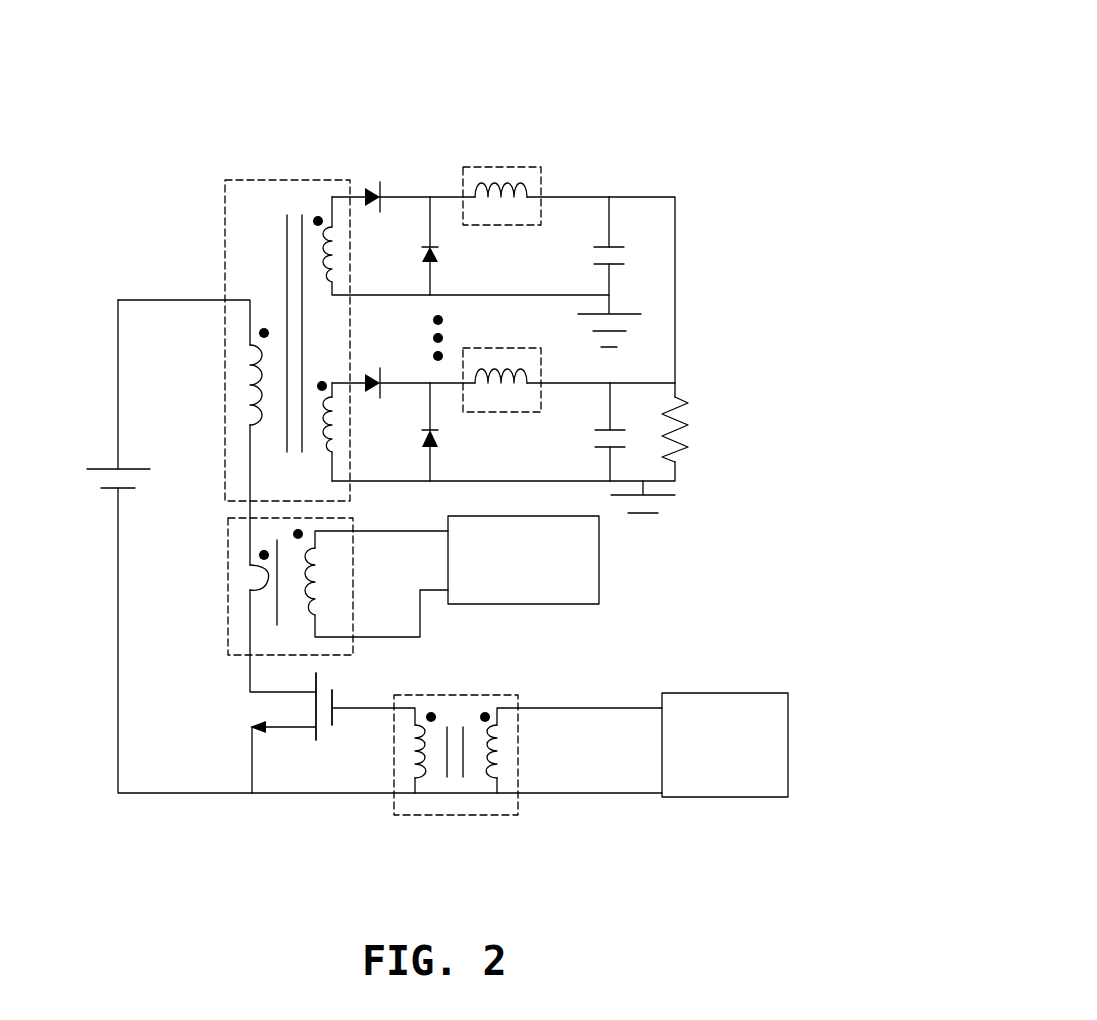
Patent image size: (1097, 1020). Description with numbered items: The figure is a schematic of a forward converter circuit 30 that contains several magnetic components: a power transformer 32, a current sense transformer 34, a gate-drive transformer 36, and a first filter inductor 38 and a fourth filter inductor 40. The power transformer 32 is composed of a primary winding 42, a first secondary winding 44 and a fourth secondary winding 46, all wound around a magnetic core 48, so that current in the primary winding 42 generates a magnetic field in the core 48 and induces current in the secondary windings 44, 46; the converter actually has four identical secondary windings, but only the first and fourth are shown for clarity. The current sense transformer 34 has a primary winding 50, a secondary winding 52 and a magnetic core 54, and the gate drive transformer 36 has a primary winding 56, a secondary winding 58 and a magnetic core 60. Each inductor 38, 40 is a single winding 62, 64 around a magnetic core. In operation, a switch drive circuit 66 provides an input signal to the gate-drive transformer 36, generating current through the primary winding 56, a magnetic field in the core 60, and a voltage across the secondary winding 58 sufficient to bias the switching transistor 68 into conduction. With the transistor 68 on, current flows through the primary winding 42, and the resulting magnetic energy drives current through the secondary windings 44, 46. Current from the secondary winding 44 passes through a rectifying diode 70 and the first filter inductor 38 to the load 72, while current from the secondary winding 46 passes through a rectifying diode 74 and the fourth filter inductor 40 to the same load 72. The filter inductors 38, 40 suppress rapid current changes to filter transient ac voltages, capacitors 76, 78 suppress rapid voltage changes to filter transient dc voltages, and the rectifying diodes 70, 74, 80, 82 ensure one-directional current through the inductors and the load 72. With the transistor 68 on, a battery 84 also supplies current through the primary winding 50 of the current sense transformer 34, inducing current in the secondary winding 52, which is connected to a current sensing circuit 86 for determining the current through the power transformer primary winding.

The forward converter circuit 30 is at (716, 81).
The power transformer 32 is at (252, 170).
The current sense transformer 34 is at (237, 672).
The gate-drive transformer 36 is at (491, 680).
The first filter inductor 38 is at (524, 160).
The fourth filter inductor 40 is at (506, 424).
The primary winding 42 is at (252, 402).
The first secondary winding 44 is at (336, 250).
The fourth secondary winding 46 is at (340, 418).
The magnetic core 48 is at (285, 232).
The primary winding 50 is at (256, 583).
The secondary winding 52 is at (320, 585).
The magnetic core 54 is at (276, 612).
The primary winding 56 is at (501, 748).
The secondary winding 58 is at (412, 746).
The magnetic core 60 is at (462, 734).
The single winding 62 is at (490, 205).
The single winding 64 is at (488, 360).
The switch drive circuit 66 is at (722, 682).
The switching transistor 68 is at (335, 703).
The rectifying diode 70 is at (382, 194).
The load 72 is at (690, 405).
The rectifying diode 74 is at (385, 382).
The capacitor 76 is at (605, 246).
The capacitor 78 is at (606, 430).
The rectifying diode 80 is at (426, 252).
The rectifying diode 82 is at (443, 433).
The battery 84 is at (111, 468).
The current sensing circuit 86 is at (612, 552).